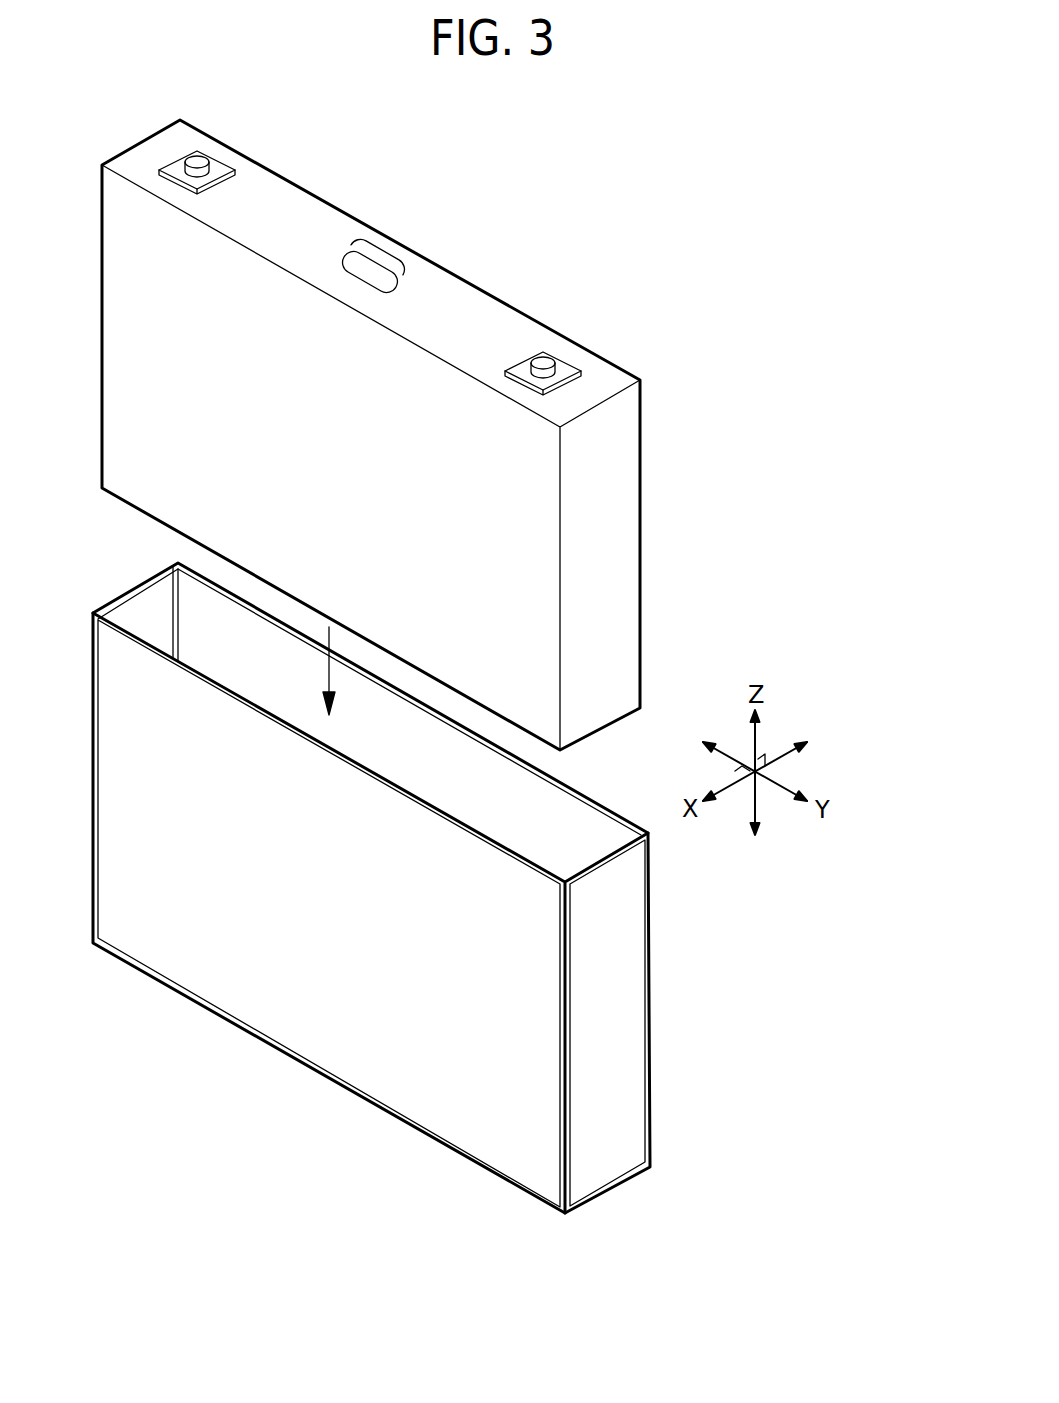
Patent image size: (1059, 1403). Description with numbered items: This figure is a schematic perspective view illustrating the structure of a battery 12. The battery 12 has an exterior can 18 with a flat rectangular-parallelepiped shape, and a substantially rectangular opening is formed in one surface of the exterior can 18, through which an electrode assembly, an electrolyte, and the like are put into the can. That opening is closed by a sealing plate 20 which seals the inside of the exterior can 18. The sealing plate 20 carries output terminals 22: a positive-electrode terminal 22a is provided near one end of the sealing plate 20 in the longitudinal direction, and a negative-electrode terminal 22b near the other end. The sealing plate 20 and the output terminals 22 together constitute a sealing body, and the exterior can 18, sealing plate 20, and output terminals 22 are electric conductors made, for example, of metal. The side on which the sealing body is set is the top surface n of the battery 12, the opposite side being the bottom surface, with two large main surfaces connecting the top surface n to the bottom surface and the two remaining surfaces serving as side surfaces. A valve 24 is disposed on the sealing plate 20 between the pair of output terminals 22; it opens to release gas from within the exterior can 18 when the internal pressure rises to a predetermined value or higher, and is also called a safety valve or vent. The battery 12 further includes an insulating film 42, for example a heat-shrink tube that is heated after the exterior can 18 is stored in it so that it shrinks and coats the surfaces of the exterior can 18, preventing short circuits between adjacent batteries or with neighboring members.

The battery 12 is at (403, 893).
The exterior can 18 is at (623, 610).
The sealing plate 20 is at (407, 411).
The output terminals 22 is at (413, 234).
The positive-electrode terminal 22a is at (542, 350).
The negative-electrode terminal 22b is at (197, 157).
The valve 24 is at (368, 277).
The insulating film 42 is at (623, 1017).
The top surface n is at (298, 210).